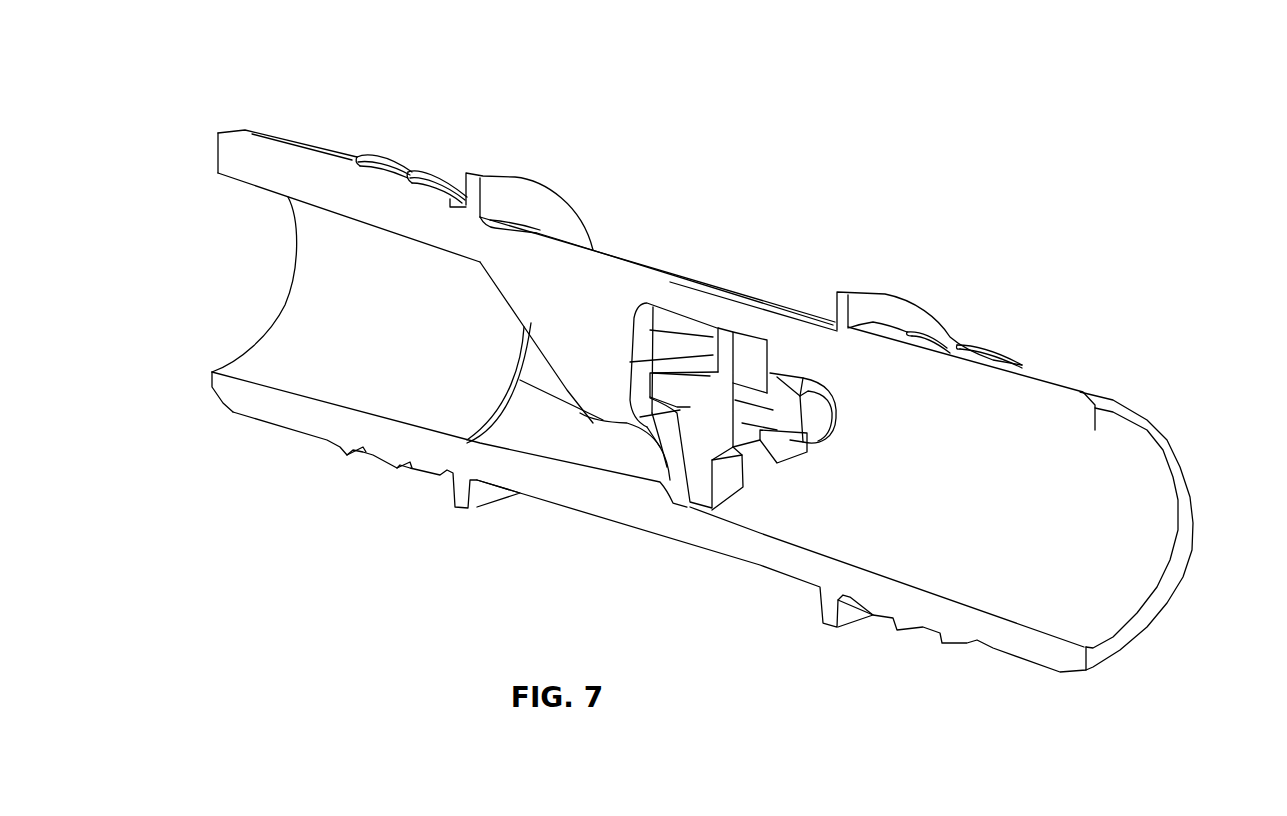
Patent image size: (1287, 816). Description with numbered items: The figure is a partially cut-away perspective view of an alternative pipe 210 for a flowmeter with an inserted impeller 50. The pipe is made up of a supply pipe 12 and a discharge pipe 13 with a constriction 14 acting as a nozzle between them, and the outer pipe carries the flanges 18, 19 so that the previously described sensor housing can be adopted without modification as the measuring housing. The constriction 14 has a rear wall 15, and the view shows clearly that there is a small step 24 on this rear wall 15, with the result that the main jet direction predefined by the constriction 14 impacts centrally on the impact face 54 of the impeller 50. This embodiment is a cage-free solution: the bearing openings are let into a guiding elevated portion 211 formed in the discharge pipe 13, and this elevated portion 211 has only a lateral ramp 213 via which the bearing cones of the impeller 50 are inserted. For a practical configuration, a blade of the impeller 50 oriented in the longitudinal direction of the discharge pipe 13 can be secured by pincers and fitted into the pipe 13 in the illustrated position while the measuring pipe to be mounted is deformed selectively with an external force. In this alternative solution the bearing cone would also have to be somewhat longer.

The alternative pipe 210 is at (536, 148).
The supply pipe 12 is at (253, 187).
The flange 19 is at (543, 213).
The flange 18 is at (893, 312).
The rear wall 15 is at (663, 343).
The impeller 50 is at (743, 358).
The guiding elevated portion 211 is at (794, 391).
The lateral ramp 213 is at (820, 417).
The discharge pipe 13 is at (1137, 472).
The constriction 14 is at (630, 450).
The small step 24 is at (673, 483).
The impact face 54 is at (687, 480).